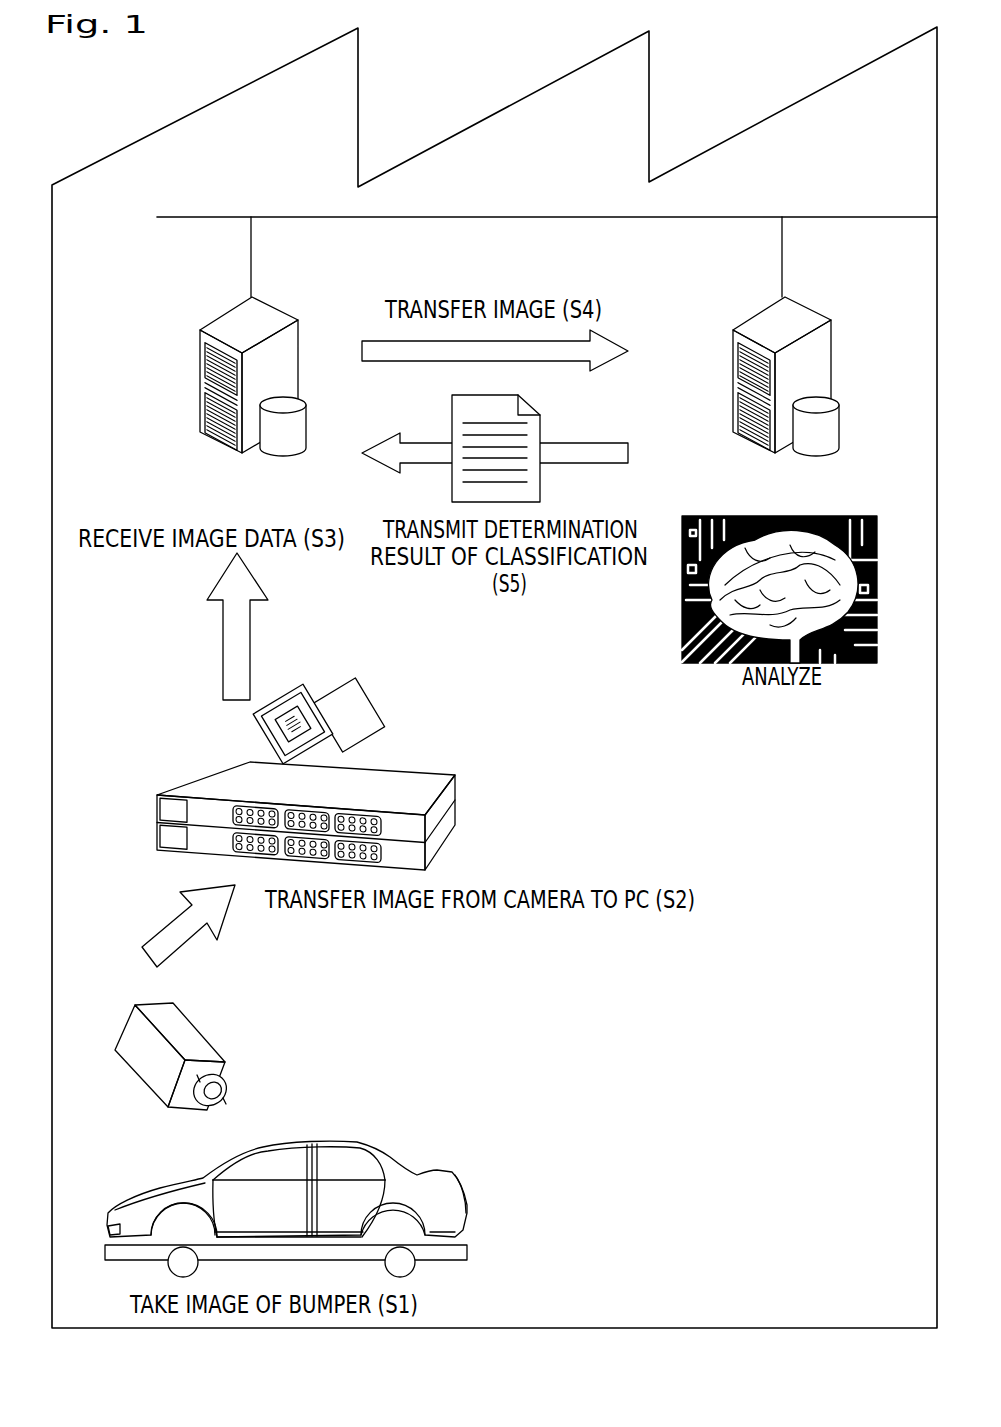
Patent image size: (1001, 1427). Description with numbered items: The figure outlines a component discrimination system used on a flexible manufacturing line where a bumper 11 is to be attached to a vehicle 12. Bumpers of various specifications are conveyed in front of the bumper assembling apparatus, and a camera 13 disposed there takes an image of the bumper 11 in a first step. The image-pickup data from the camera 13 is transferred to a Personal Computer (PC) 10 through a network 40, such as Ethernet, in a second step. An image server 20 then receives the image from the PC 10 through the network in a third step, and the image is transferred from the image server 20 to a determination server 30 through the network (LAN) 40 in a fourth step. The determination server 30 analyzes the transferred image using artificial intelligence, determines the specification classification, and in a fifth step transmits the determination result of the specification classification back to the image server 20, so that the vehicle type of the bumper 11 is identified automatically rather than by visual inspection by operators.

The network (LAN) 40 is at (408, 217).
The image server 20 is at (205, 437).
The determination server 30 is at (750, 442).
The Personal Computer (PC) 10 is at (448, 803).
The camera 13 is at (130, 1027).
The vehicle 12 is at (465, 1214).
The bumper 11 is at (457, 1248).